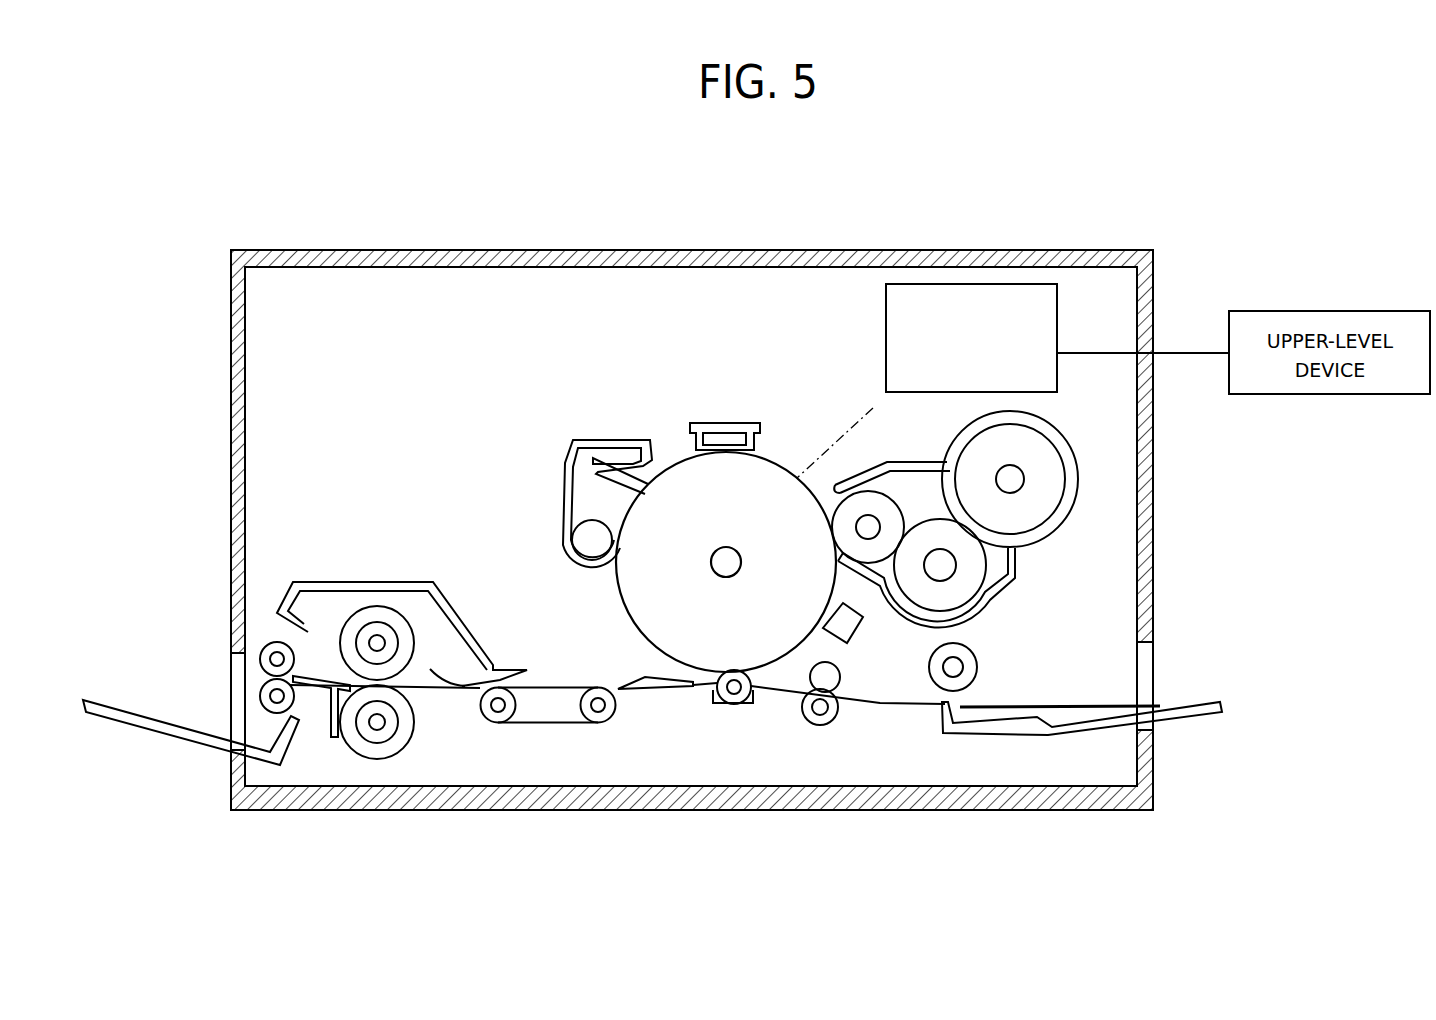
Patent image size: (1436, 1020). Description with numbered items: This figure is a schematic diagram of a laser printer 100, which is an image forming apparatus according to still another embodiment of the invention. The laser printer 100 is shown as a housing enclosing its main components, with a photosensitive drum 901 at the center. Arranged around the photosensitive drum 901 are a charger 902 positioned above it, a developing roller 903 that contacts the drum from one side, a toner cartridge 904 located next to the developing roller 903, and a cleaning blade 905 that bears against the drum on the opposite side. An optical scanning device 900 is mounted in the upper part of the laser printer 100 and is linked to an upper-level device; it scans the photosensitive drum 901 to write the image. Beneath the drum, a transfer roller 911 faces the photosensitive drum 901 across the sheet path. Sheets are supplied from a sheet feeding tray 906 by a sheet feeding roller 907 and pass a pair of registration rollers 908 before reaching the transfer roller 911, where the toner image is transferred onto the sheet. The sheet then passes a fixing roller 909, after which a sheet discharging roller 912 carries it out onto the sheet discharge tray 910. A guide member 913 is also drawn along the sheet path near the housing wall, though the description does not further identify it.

The laser printer 100 is at (830, 222).
The optical scanning device 900 is at (985, 283).
The photosensitive drum 901 is at (685, 478).
The charger 902 is at (722, 420).
The developing roller 903 is at (845, 508).
The toner cartridge 904 is at (1067, 455).
The cleaning blade 905 is at (617, 488).
The sheet feeding tray 906 is at (1187, 718).
The sheet feeding roller 907 is at (967, 660).
The pair of registration rollers 908 is at (822, 722).
The fixing roller 909 is at (383, 613).
The sheet discharge tray 910 is at (123, 725).
The transfer roller 911 is at (738, 700).
The sheet discharging roller 912 is at (262, 661).
The paper discharge guide 913 is at (1057, 704).